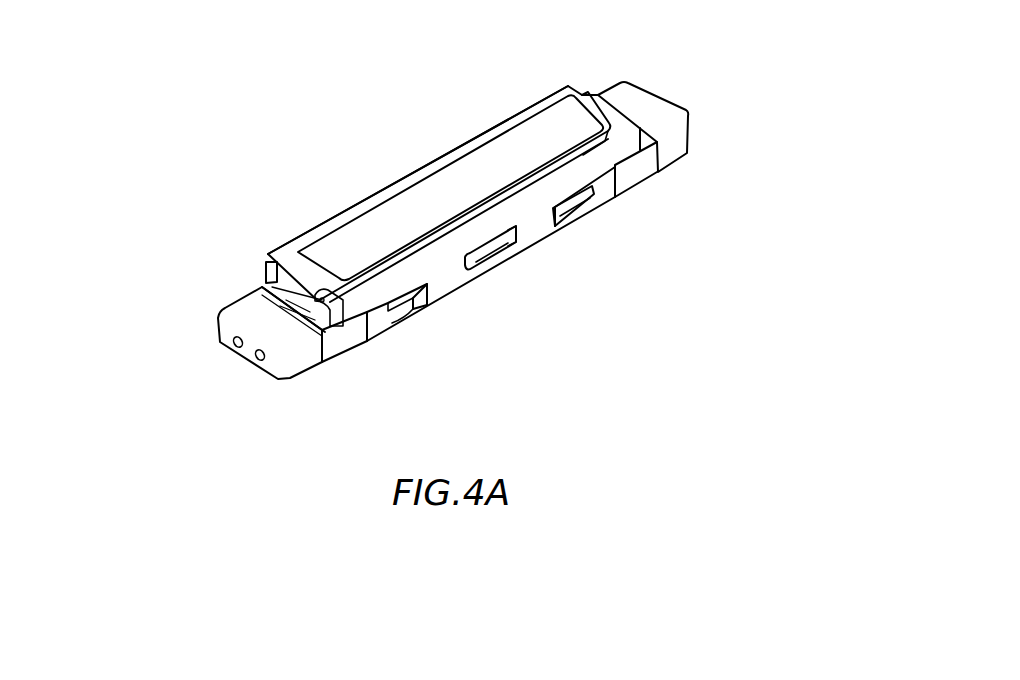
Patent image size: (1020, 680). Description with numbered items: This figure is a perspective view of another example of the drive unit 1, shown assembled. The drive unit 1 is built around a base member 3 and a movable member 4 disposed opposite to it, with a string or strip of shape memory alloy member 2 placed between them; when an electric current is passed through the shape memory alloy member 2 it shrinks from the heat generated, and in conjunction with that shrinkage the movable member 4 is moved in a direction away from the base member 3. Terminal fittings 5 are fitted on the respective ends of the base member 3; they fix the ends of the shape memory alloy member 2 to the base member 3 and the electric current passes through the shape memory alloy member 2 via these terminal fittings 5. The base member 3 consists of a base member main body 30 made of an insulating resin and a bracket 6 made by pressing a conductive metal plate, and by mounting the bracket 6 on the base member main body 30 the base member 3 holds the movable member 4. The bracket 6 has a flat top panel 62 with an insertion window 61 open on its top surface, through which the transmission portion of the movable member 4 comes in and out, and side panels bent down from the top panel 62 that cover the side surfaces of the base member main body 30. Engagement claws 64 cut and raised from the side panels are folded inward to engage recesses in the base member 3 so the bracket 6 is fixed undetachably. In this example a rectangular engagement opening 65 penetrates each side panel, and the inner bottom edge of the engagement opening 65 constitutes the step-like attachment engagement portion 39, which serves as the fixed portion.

The drive unit 1 is at (373, 150).
The shape memory alloy member 2 is at (288, 293).
The base member 3 is at (475, 337).
The movable member 4 is at (322, 240).
The terminal fitting 5 is at (289, 369).
The bracket 6 is at (437, 290).
The base member main body 30 is at (343, 348).
The attachment engagement portion 39 is at (497, 255).
The insertion window 61 is at (598, 132).
The top panel 62 is at (599, 108).
The engagement claw 64 is at (583, 210).
The engagement opening 65 is at (522, 235).